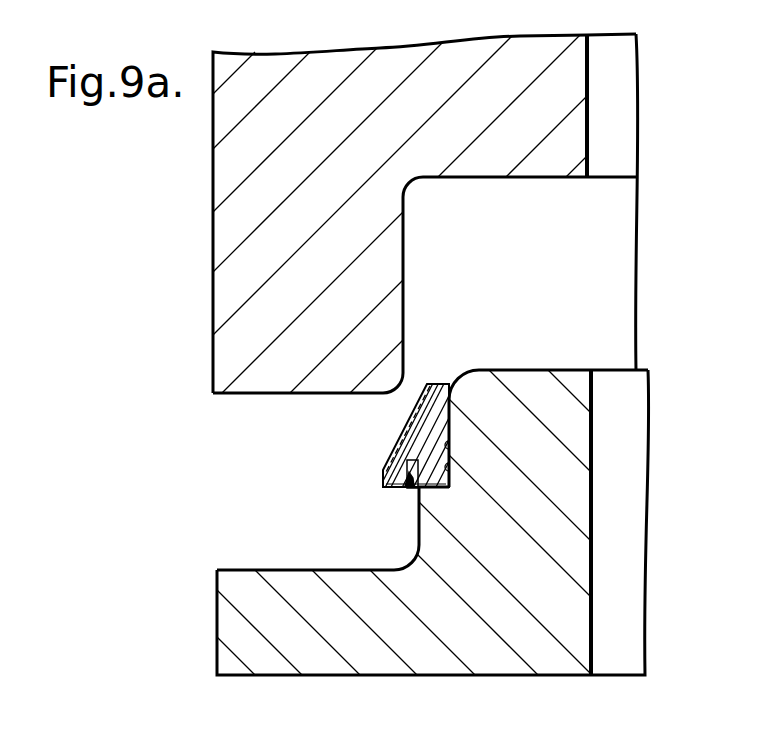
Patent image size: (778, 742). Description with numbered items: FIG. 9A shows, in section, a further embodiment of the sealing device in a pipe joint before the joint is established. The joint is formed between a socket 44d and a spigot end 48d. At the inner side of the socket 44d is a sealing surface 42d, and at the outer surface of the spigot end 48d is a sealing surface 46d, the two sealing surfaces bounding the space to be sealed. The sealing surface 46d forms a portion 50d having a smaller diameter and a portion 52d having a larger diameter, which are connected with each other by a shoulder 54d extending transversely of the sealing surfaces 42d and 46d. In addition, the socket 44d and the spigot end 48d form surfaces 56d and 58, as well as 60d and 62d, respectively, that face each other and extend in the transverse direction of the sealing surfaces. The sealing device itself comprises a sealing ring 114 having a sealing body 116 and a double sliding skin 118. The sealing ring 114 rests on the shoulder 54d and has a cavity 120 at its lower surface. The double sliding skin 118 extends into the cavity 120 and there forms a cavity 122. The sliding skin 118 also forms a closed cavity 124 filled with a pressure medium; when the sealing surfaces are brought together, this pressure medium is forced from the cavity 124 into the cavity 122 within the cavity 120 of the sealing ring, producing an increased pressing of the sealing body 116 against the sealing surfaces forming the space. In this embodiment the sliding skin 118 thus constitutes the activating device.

The socket 44d is at (381, 70).
The surface of the socket 60d is at (535, 180).
The sealing surface 42d is at (405, 293).
The surface of the socket 56d is at (278, 396).
The spigot end 48d is at (494, 652).
The surface of the spigot end 62d is at (553, 369).
The portion having a smaller diameter 50d is at (447, 378).
The portion having a larger diameter 52d is at (418, 532).
The surface of the spigot end 58 is at (230, 570).
The sealing surface 46d is at (450, 450).
The shoulder 54d is at (450, 463).
The double sliding skin 118 is at (391, 435).
The sealing body 116 is at (392, 433).
The sealing ring 114 is at (388, 450).
The cavity 122 is at (401, 489).
The cavity 124 is at (378, 473).
The cavity 120 is at (381, 474).